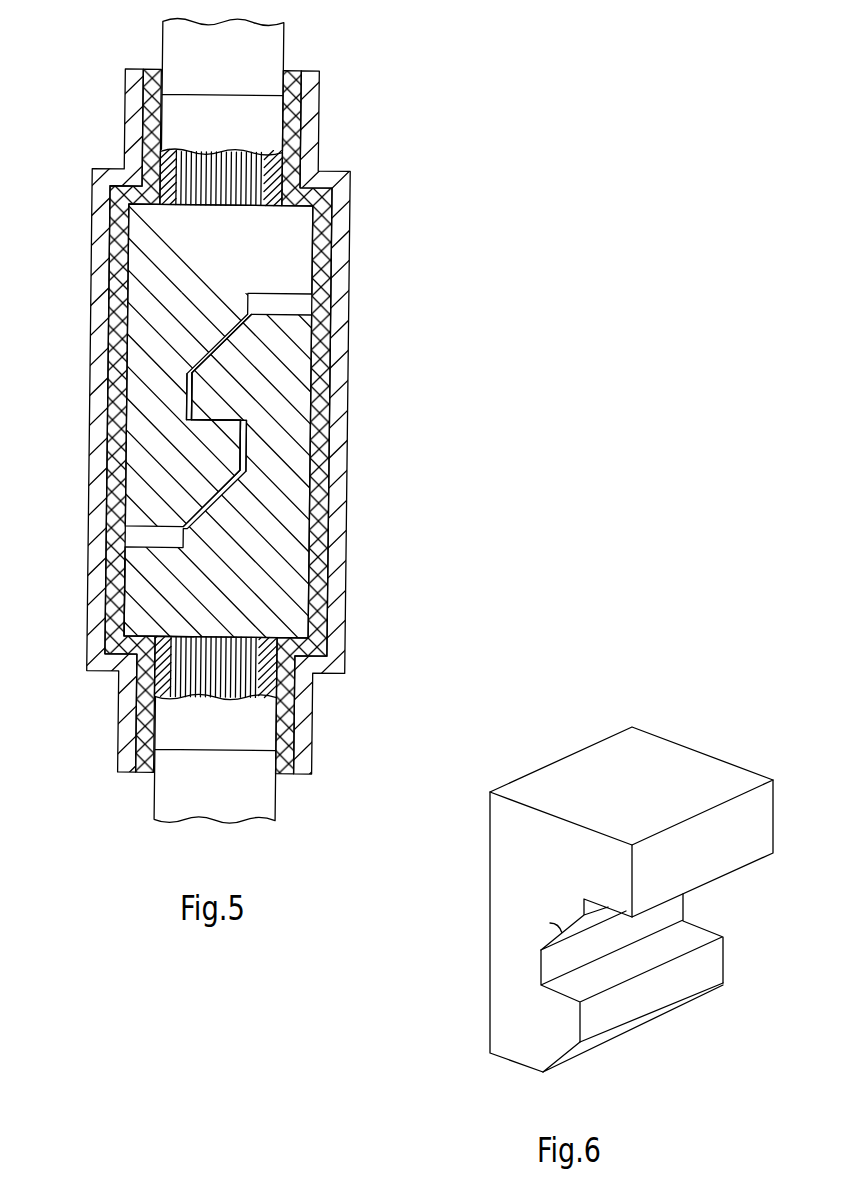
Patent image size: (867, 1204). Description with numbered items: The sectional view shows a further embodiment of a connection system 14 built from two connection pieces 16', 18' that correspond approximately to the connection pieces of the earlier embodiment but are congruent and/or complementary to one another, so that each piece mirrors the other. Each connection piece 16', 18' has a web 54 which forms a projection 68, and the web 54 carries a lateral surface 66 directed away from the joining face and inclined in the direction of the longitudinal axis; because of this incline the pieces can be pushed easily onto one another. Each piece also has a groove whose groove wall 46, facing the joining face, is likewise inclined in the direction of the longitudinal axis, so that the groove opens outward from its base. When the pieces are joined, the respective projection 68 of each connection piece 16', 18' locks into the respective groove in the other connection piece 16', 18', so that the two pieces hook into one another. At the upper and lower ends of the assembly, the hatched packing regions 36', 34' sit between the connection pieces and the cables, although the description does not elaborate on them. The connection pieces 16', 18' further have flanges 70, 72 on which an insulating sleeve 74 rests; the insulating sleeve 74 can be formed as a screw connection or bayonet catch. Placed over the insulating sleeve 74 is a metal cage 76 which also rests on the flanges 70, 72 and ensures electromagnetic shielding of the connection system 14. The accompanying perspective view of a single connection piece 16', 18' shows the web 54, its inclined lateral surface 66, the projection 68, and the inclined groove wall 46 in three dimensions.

In FIG. 5, the connection system 14 is at (388, 296).
In FIG. 5, the connection piece 16' is at (359, 371).
In FIG. 6, the connection piece 16' is at (599, 855).
In FIG. 5, the connection piece 18' is at (359, 473).
In FIG. 6, the connection piece 18' is at (599, 911).
In FIG. 5, the lower packing 34' is at (276, 679).
In FIG. 5, the upper packing 36' is at (163, 164).
In FIG. 6, the groove wall 46 is at (550, 923).
In FIG. 6, the web 54 is at (548, 1028).
In FIG. 6, the lateral surface 66 is at (637, 1027).
In FIG. 6, the projection 68 is at (692, 973).
In FIG. 5, the flange 70 is at (145, 610).
In FIG. 5, the flange 72 is at (292, 232).
In FIG. 5, the insulating sleeve 74 is at (315, 256).
In FIG. 5, the metal cage 76 is at (337, 227).